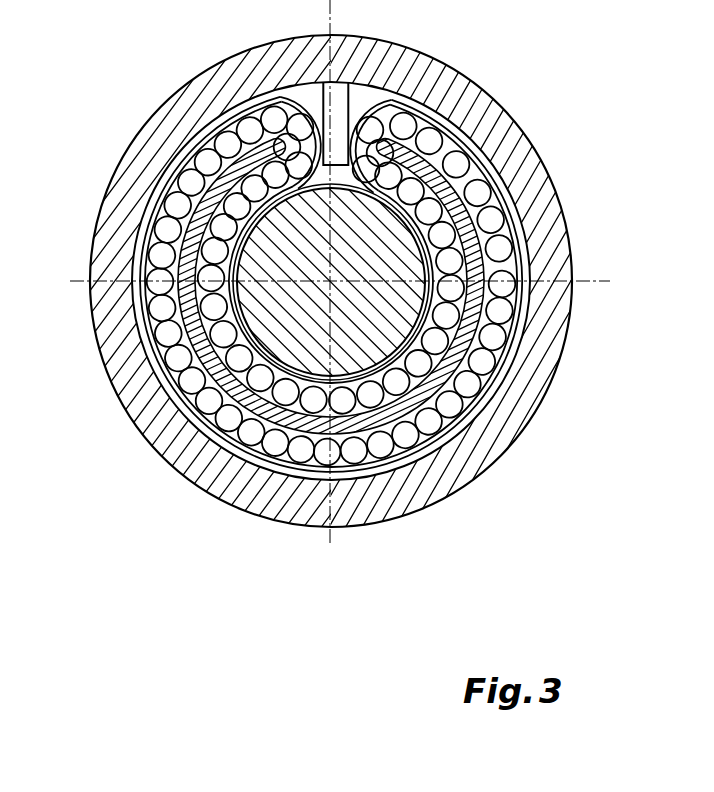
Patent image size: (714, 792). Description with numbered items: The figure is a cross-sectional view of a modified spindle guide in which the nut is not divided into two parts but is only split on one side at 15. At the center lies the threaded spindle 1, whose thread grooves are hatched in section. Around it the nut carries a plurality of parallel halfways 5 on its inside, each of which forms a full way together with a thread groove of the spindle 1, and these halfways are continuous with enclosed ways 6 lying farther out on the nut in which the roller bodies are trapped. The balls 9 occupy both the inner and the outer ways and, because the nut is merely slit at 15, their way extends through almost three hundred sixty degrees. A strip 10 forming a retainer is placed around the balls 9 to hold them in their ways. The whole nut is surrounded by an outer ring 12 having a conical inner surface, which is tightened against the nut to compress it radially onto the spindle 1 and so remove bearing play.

The threaded spindle 1 is at (255, 322).
The halfways 5 is at (242, 428).
The enclosed ways 6 is at (193, 415).
The balls 9 is at (282, 134).
The strip 10 is at (160, 371).
The outer ring 12 is at (128, 211).
The split 15 is at (323, 80).